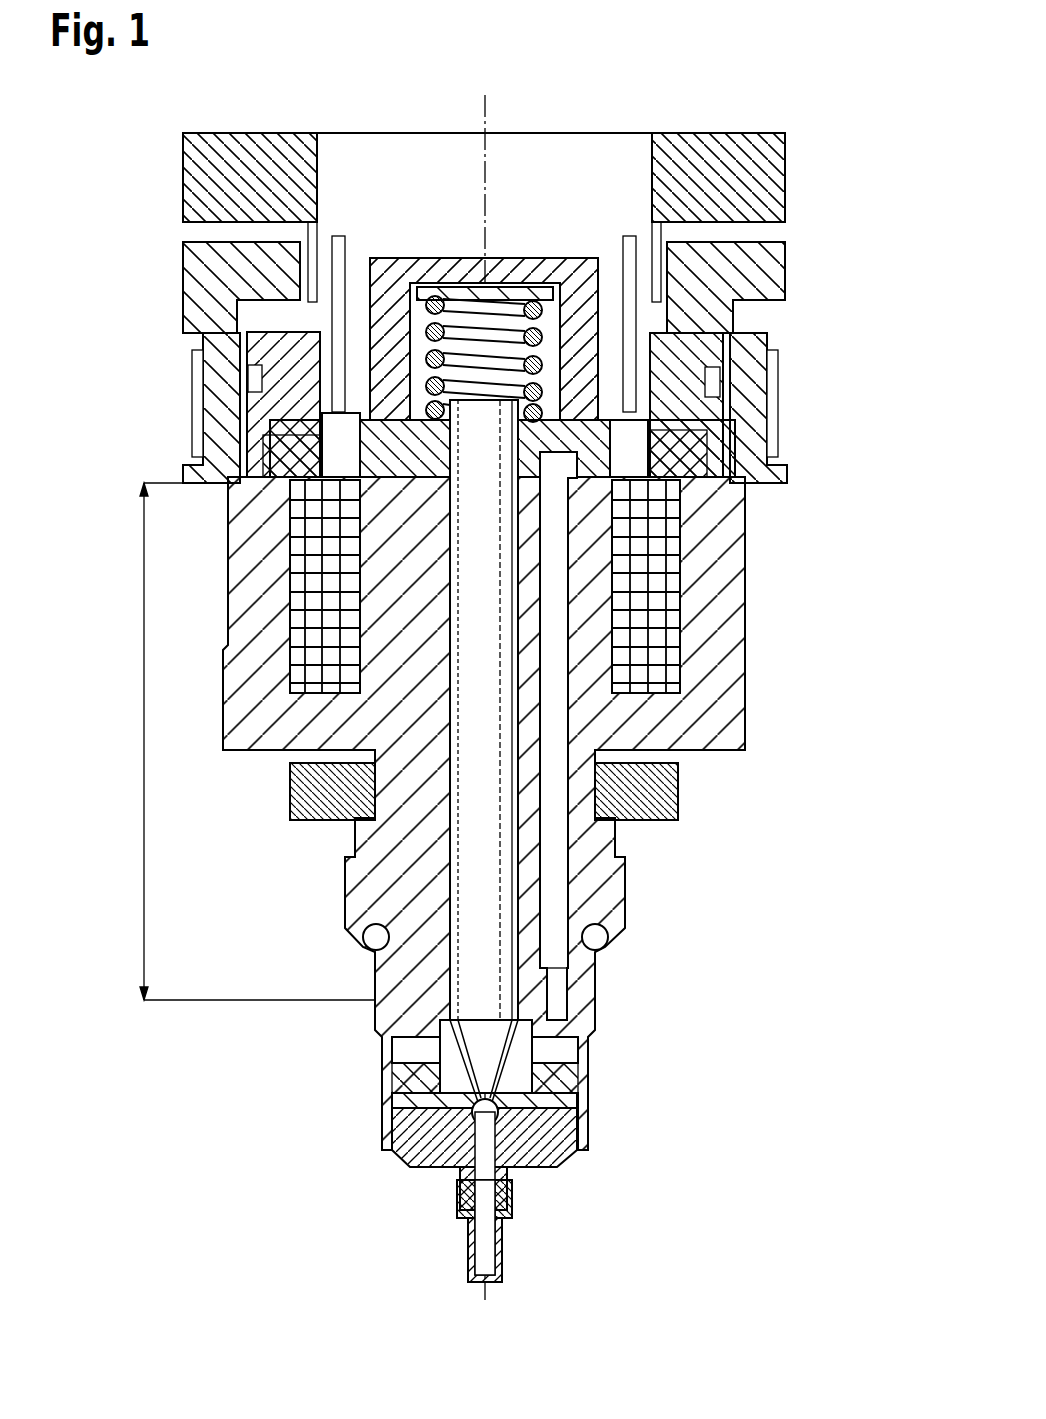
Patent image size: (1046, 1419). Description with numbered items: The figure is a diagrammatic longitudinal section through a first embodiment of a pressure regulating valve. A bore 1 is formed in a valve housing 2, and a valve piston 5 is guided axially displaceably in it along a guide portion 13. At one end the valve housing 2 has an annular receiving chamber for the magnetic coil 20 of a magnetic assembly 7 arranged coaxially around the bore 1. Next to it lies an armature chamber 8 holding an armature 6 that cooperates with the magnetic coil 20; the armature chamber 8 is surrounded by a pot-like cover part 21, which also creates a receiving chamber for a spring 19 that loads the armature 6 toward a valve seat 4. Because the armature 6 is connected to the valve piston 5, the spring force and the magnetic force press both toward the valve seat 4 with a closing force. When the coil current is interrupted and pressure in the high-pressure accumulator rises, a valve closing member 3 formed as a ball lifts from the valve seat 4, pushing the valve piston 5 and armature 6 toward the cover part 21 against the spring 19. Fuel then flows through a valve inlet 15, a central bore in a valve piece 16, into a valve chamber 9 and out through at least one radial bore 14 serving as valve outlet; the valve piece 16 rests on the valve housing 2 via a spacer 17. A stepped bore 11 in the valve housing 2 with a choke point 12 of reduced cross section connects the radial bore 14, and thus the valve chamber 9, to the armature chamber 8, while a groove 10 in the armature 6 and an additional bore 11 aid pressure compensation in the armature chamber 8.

The bore 1 is at (467, 839).
The valve housing 2 is at (407, 966).
The valve closing member 3 is at (470, 1115).
The valve seat 4 is at (442, 1169).
The valve piston 5 is at (467, 774).
The armature 6 is at (252, 444).
The magnetic assembly 7 is at (778, 546).
The armature chamber 8 is at (690, 431).
The valve chamber 9 is at (517, 1077).
The groove 10 is at (595, 454).
The bore 11 is at (590, 442).
The choke point 12 is at (553, 1006).
The guide portion 13 is at (144, 745).
The radial bore 14 is at (403, 1049).
The valve inlet 15 is at (487, 1189).
The valve piece 16 is at (545, 1132).
The spacer 17 is at (577, 1099).
The spring 19 is at (530, 295).
The magnetic coil 20 is at (660, 619).
The cover part 21 is at (237, 379).